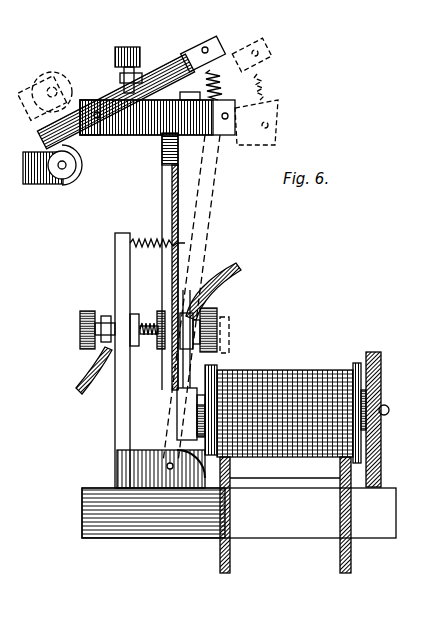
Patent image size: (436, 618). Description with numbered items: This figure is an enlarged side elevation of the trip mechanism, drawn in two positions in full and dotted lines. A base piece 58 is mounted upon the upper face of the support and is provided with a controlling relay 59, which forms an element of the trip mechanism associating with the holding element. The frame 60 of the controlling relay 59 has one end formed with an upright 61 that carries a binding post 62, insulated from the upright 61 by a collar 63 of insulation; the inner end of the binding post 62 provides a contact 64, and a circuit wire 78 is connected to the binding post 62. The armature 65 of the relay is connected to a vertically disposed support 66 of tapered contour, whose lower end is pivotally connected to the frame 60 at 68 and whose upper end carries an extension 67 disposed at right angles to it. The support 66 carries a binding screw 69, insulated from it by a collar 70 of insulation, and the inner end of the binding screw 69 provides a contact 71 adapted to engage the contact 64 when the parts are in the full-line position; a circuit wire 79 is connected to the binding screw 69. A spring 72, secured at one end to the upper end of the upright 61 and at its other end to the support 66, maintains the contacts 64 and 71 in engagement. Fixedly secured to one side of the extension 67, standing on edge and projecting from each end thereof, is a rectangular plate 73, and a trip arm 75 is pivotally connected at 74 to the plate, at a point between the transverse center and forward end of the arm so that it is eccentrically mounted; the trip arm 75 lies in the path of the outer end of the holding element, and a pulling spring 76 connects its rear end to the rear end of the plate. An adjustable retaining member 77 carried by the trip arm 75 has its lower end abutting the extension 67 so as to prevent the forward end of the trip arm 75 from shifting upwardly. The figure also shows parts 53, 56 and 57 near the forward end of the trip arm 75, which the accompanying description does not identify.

The roller bracket 53 is at (44, 185).
The roller 56 is at (62, 180).
The roller housing 57 is at (81, 178).
The base piece 58 is at (385, 497).
The controlling relay 59 is at (315, 388).
The frame 60 is at (376, 396).
The upright 61 is at (115, 261).
The binding post 62 is at (101, 317).
The collar of insulation 63 is at (136, 314).
The contact 64 is at (146, 348).
The armature 65 is at (180, 408).
The support 66 is at (173, 226).
The extension 67 is at (133, 136).
The pivotal connection 68 is at (168, 463).
The binding screw 69 is at (215, 312).
The collar of insulation 70 is at (160, 322).
The contact 71 is at (150, 338).
The spring 72 is at (148, 239).
The rectangular plate 73 is at (90, 100).
The pivotal connection 74 is at (100, 112).
The trip arm 75 is at (72, 142).
The pulling spring 76 is at (228, 68).
The adjustable retaining member 77 is at (138, 52).
The circuit wire 78 is at (90, 375).
The circuit wire 79 is at (240, 272).